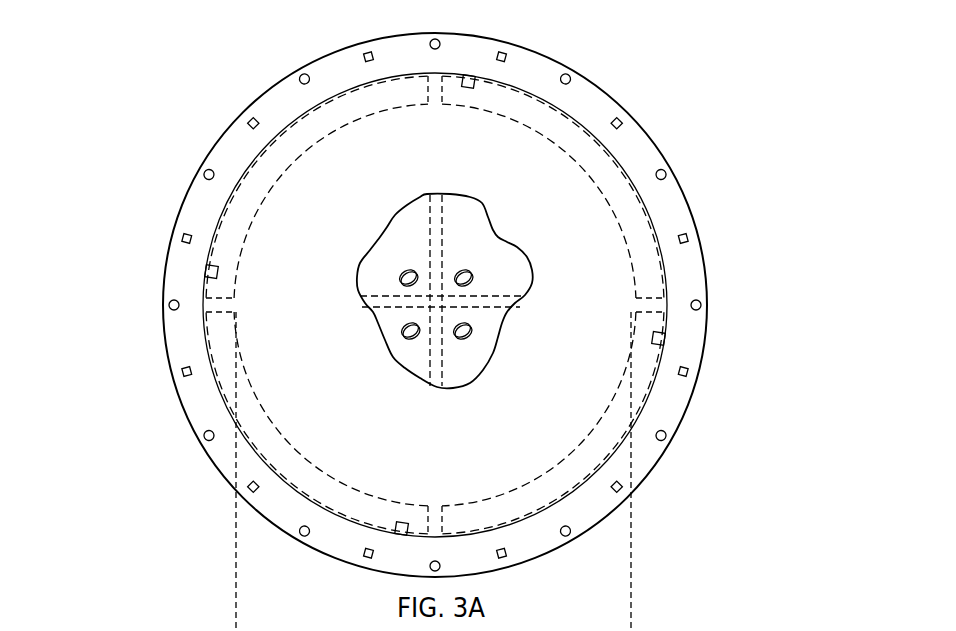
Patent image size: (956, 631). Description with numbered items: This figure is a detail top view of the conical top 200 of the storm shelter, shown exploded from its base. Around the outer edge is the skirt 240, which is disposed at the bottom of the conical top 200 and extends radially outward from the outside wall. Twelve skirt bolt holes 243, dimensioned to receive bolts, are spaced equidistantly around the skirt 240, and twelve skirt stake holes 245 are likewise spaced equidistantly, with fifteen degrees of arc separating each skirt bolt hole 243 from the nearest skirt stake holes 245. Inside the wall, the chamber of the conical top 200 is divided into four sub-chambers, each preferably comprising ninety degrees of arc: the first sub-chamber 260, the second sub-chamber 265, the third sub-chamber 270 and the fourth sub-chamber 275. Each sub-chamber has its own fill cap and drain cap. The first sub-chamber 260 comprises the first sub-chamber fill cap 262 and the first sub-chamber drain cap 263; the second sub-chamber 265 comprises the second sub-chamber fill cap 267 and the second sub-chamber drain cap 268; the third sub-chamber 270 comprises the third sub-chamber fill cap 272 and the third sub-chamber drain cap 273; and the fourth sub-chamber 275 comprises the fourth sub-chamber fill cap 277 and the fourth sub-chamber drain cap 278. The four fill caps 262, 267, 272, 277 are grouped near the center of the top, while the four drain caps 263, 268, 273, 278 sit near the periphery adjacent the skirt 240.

The conical top 200 is at (697, 55).
The skirt 240 is at (197, 205).
The skirt bolt holes 243 is at (167, 303).
The skirt stake holes 245 is at (185, 236).
The second sub-chamber drain cap 268 is at (198, 270).
The third sub-chamber drain cap 273 is at (467, 74).
The fourth sub-chamber drain cap 278 is at (665, 346).
The first sub-chamber drain cap 263 is at (400, 537).
The second sub-chamber 265 is at (410, 218).
The second sub-chamber fill cap 267 is at (403, 272).
The third sub-chamber 270 is at (467, 225).
The third sub-chamber fill cap 272 is at (470, 273).
The first sub-chamber 260 is at (387, 322).
The first sub-chamber fill cap 262 is at (403, 337).
The fourth sub-chamber 275 is at (487, 333).
The fourth sub-chamber fill cap 277 is at (465, 333).